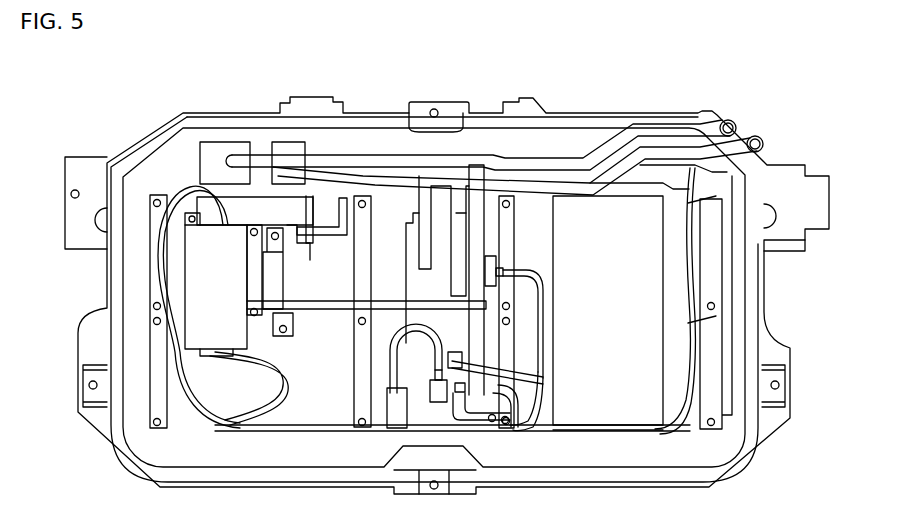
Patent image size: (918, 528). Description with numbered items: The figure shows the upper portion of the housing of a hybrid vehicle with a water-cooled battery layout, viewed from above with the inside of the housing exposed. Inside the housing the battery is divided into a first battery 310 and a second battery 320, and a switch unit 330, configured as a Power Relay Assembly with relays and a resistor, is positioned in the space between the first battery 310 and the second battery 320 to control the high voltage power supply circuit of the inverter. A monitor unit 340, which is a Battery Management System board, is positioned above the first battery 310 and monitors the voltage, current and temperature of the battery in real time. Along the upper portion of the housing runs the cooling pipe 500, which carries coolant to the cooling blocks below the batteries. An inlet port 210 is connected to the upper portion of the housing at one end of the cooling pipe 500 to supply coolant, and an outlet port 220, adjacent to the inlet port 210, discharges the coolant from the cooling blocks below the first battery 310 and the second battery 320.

The inlet port 210 is at (731, 116).
The outlet port 220 is at (765, 133).
The first battery 310 is at (263, 210).
The second battery 320 is at (612, 215).
The switch unit 330 is at (440, 228).
The monitor unit 340 is at (200, 286).
The cooling pipe 500 is at (396, 157).